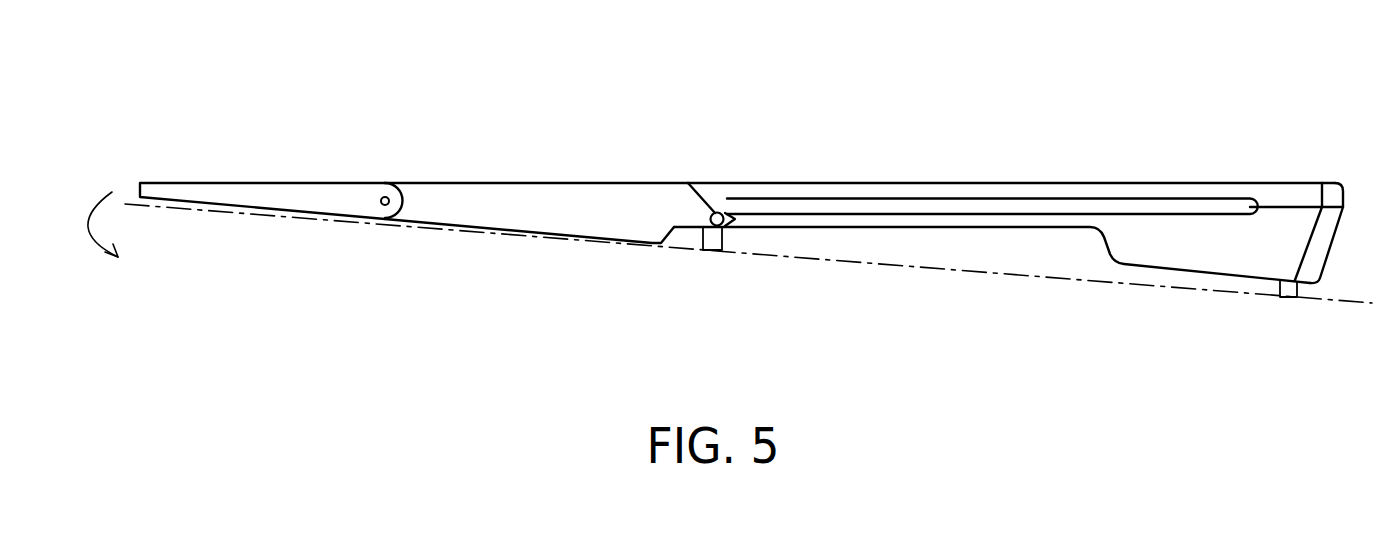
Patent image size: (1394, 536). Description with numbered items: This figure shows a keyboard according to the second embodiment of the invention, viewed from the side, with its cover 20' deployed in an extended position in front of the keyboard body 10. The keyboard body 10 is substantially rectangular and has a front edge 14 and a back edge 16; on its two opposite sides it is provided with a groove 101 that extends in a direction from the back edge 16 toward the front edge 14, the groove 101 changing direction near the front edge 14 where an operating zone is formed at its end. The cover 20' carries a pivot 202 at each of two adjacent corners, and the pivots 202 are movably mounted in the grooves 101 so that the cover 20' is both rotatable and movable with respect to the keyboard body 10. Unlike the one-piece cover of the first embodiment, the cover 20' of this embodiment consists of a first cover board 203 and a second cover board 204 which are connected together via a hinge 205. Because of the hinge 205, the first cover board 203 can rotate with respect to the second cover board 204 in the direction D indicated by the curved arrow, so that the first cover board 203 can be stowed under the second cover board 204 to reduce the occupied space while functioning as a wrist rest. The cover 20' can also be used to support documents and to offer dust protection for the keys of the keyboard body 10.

The keyboard body 10 is at (1098, 183).
The front edge 14 is at (692, 183).
The back edge 16 is at (1335, 183).
The groove 101 is at (888, 198).
The cover 20' is at (367, 51).
The pivot 202 is at (722, 212).
The first cover board 203 is at (297, 183).
The second cover board 204 is at (505, 183).
The hinge 205 is at (385, 205).
The direction D is at (90, 213).